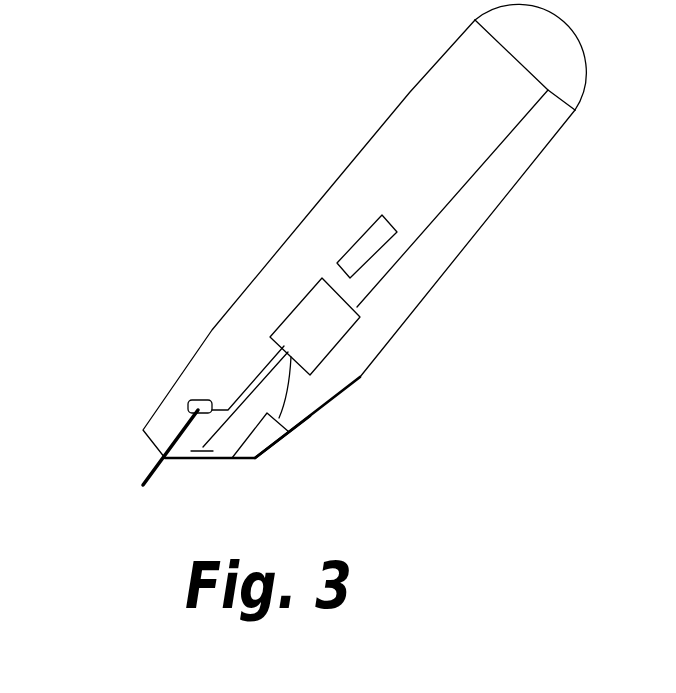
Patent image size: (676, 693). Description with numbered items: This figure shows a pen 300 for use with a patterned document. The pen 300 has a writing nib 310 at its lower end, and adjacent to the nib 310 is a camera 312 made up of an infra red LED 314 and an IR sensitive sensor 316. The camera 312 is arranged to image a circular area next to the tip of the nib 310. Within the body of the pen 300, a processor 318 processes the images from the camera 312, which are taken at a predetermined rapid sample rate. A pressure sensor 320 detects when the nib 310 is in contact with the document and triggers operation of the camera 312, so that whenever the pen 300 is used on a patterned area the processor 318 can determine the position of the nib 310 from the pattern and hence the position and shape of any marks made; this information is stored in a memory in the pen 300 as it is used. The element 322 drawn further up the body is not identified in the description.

The pen 300 is at (380, 128).
The slide switch 322 is at (350, 248).
The processor 318 is at (332, 337).
The pressure sensor 320 is at (187, 405).
The writing nib 310 is at (145, 475).
The IR sensitive sensor 316 is at (197, 449).
The infra red LED 314 is at (262, 453).
The camera 312 is at (296, 449).